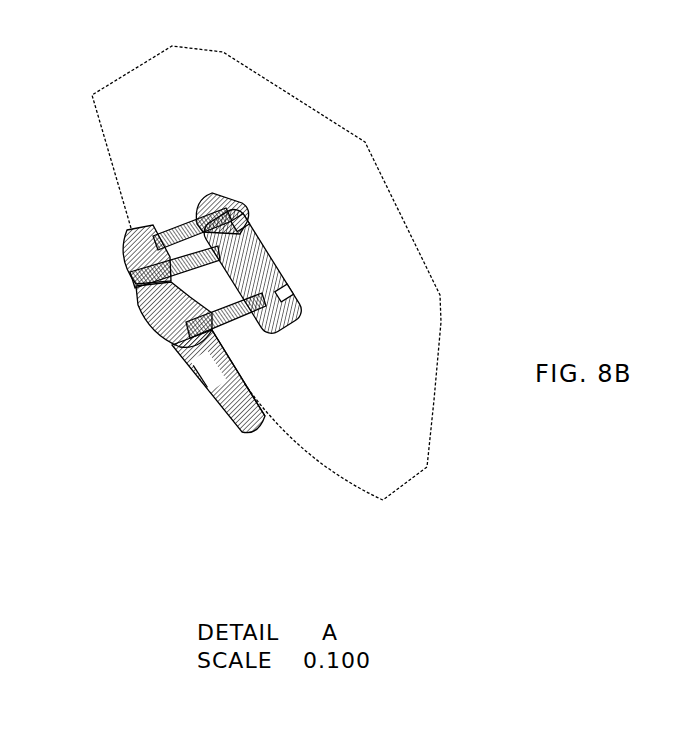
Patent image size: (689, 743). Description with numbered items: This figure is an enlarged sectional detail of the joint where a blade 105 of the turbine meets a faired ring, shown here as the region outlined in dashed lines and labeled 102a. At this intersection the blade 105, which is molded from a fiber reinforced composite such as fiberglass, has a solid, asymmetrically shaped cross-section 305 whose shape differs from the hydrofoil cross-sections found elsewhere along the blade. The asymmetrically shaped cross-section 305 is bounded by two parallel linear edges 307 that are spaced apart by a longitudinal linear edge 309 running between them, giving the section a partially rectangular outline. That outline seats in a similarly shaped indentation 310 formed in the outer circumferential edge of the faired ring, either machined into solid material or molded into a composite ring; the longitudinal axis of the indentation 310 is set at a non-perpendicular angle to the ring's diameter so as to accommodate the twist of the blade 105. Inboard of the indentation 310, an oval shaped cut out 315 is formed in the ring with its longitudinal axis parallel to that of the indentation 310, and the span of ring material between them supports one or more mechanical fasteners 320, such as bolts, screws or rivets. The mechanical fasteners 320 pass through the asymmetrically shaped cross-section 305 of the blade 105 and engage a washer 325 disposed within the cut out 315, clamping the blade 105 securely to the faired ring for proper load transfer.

The panel 102a is at (405, 336).
The blade 105 is at (196, 390).
The asymmetrically shaped cross-section 305 is at (208, 370).
The parallel linear edges 307 is at (138, 228).
The longitudinal linear edge 309 is at (247, 392).
The indentation 310 is at (150, 226).
The oval shaped cut out 315 is at (247, 214).
The mechanical fasteners 320 is at (143, 271).
The washer 325 is at (217, 202).